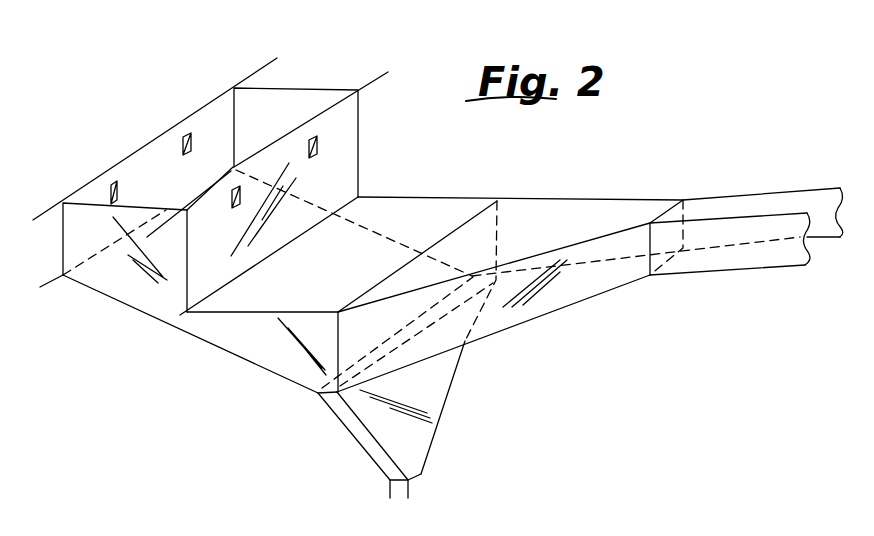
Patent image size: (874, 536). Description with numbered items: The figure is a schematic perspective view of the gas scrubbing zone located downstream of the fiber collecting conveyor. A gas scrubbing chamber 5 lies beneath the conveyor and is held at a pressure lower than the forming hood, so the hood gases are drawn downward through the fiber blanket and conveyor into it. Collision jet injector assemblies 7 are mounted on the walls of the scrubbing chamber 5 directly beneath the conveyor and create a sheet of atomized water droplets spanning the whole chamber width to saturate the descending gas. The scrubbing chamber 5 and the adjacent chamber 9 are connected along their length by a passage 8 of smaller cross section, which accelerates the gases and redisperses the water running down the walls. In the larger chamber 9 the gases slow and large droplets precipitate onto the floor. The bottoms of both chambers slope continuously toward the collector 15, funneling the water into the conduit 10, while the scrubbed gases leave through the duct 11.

The scrubbing chamber 5 is at (211, 122).
The collision jet injector assemblies 7 is at (182, 143).
The passage 8 is at (191, 318).
The chamber 9 is at (270, 354).
The conduit 10 is at (422, 478).
The duct 11 is at (718, 203).
The collector 15 is at (433, 398).